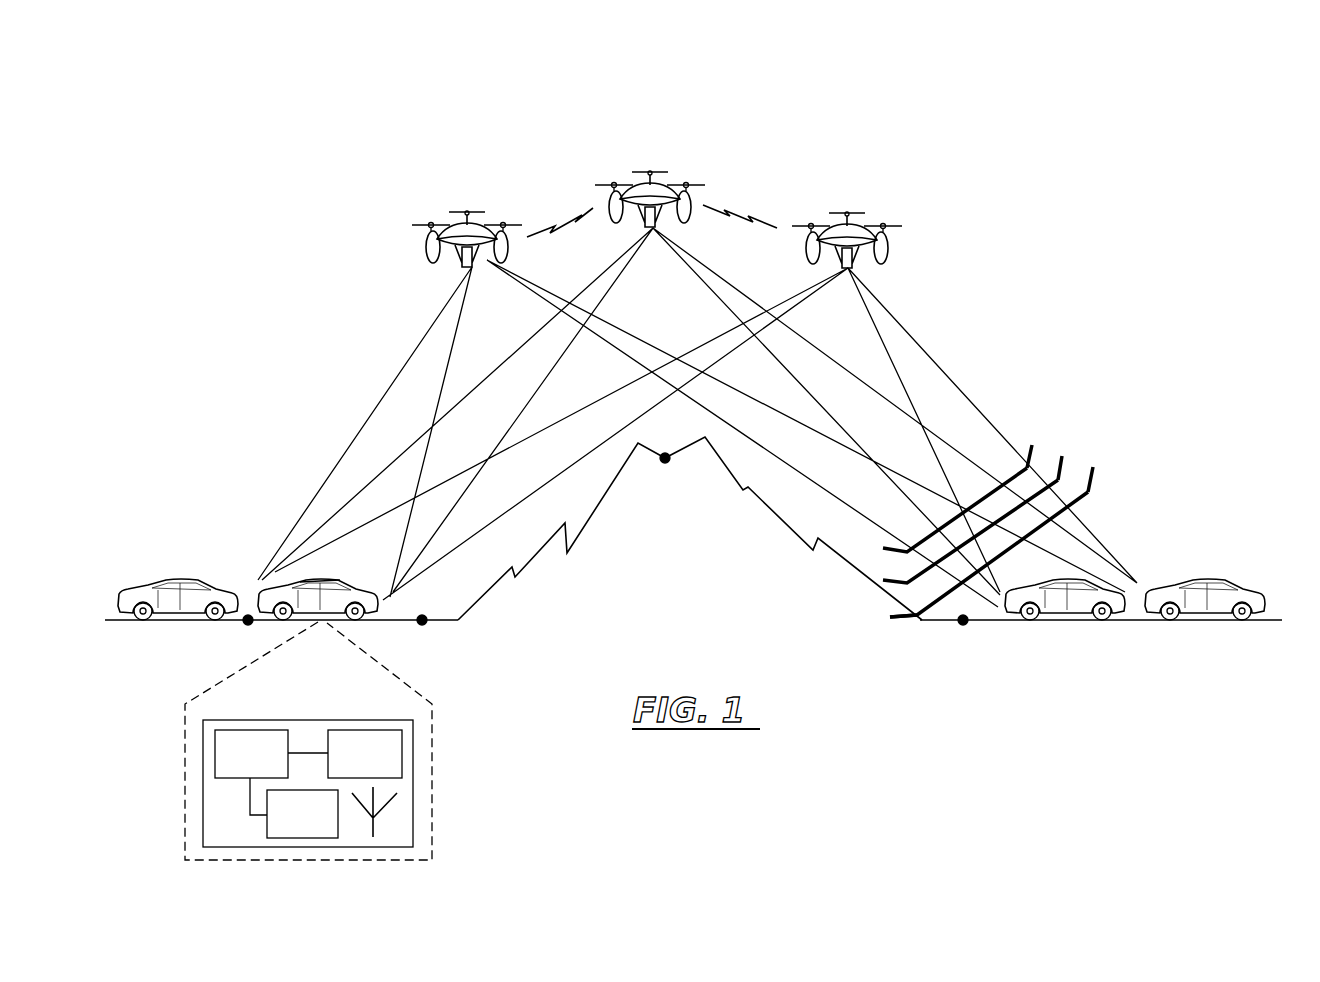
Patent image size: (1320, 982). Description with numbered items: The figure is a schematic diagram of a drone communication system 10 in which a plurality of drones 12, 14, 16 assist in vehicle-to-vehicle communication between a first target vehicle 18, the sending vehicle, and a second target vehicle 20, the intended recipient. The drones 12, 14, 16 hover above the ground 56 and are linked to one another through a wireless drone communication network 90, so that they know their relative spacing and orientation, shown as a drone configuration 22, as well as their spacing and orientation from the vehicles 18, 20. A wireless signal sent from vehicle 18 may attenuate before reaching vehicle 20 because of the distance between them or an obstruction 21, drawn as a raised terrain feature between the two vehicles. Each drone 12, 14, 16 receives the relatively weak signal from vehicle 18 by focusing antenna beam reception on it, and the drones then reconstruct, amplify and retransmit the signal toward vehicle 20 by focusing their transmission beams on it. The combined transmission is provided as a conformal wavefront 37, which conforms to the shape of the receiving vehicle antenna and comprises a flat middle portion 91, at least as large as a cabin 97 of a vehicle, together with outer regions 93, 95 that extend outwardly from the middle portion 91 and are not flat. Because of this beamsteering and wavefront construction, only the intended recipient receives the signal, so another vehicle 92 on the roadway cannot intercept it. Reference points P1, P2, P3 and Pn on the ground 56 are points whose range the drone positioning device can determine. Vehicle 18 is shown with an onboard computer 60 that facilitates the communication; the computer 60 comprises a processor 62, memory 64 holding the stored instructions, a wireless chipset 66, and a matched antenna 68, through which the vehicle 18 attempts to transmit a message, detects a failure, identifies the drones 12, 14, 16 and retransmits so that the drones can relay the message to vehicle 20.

The drone communication system 10 is at (1050, 117).
The drone 12 is at (436, 212).
The drone 14 is at (622, 172).
The drone 16 is at (877, 210).
The first target vehicle 18 is at (368, 622).
The second target vehicle 20 is at (1050, 620).
The obstruction 21 is at (780, 518).
The drone configuration 22 is at (668, 136).
The conformal wavefront 37 is at (1005, 553).
The ground 56 is at (1268, 620).
The computer 60 is at (337, 720).
The processor 62 is at (271, 772).
The memory 64 is at (365, 754).
The wireless chipset 66 is at (302, 814).
The matched antenna 68 is at (378, 826).
The wireless drone communication network 90 is at (738, 212).
The middle portion 91 is at (1082, 492).
The vehicle 92 is at (1215, 578).
The outer region 93 is at (1095, 477).
The outer region 95 is at (895, 605).
The cabin 97 is at (325, 590).
The reference point P1 is at (248, 625).
The reference point P2 is at (422, 625).
The reference point P3 is at (665, 462).
The reference point Pn is at (963, 625).